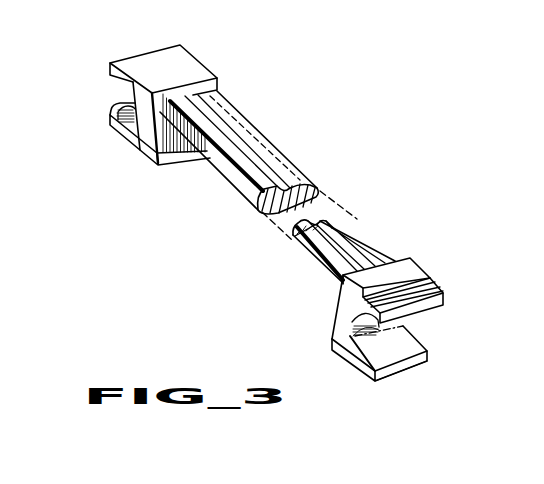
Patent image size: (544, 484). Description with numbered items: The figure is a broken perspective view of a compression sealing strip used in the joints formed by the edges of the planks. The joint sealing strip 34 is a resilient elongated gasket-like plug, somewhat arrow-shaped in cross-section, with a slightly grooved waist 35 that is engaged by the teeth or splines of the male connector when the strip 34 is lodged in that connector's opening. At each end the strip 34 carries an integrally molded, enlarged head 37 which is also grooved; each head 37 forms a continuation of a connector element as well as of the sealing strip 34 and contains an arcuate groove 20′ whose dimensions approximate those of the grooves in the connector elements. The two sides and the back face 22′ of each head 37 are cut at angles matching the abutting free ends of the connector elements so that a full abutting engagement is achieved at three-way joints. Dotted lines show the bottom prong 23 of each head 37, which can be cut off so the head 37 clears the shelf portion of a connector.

The arcuate groove 20′ is at (120, 112).
The back face 22′ is at (140, 150).
The bottom prong 23 is at (352, 362).
The joint sealing strip 34 is at (285, 149).
The grooved waist 35 is at (300, 172).
The head 37 is at (195, 70).